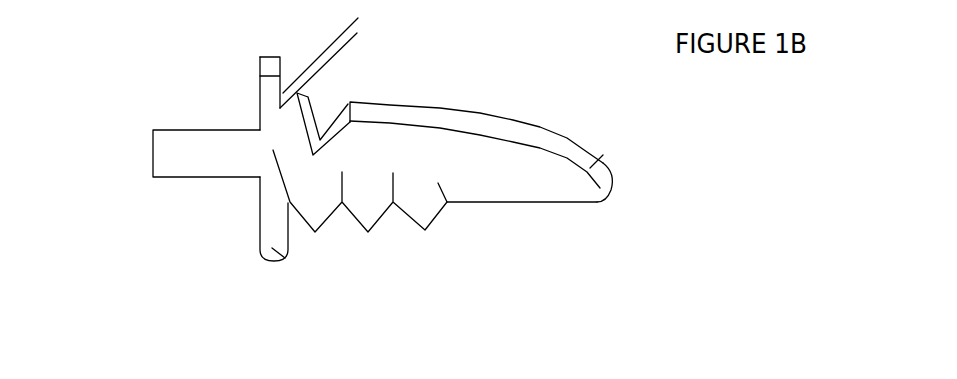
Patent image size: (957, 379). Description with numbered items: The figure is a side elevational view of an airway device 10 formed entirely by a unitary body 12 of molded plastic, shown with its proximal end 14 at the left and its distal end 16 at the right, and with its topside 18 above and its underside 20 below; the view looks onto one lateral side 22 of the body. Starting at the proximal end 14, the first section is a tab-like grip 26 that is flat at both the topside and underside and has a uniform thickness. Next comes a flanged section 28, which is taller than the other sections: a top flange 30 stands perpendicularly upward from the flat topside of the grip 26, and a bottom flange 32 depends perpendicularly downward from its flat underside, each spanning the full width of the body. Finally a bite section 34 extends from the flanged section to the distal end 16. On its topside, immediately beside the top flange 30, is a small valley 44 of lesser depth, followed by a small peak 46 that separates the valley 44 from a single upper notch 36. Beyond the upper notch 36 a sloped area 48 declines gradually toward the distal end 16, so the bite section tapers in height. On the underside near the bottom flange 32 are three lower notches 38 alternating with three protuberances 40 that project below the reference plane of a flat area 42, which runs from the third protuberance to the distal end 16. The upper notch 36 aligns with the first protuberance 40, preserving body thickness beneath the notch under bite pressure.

The airway device 10 is at (562, 80).
The unitary body 12 is at (438, 92).
The proximal end 14 is at (153, 143).
The distal end 16 is at (617, 175).
The topside 18 is at (482, 112).
The underside 20 is at (487, 204).
The lateral side 22 is at (527, 180).
The tab-like grip 26 is at (203, 147).
The flanged section 28 is at (282, 67).
The top flange 30 is at (261, 92).
The bottom flange 32 is at (265, 222).
The bite section 34 is at (394, 108).
The upper notch 36 is at (320, 118).
The lower notch 38 is at (407, 268).
The protuberance 40 is at (443, 290).
The flat area 42 is at (513, 203).
The valley 44 is at (337, 46).
The peak 46 is at (333, 66).
The sloped area 48 is at (508, 127).